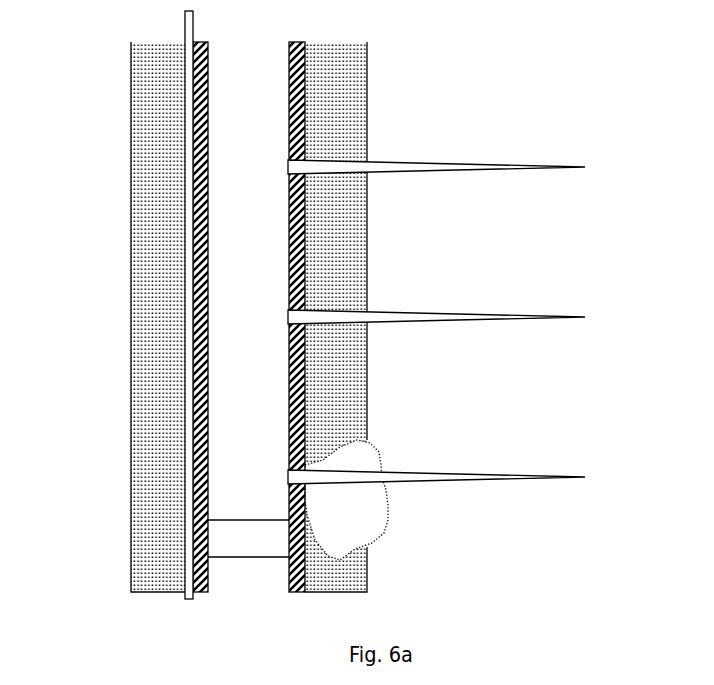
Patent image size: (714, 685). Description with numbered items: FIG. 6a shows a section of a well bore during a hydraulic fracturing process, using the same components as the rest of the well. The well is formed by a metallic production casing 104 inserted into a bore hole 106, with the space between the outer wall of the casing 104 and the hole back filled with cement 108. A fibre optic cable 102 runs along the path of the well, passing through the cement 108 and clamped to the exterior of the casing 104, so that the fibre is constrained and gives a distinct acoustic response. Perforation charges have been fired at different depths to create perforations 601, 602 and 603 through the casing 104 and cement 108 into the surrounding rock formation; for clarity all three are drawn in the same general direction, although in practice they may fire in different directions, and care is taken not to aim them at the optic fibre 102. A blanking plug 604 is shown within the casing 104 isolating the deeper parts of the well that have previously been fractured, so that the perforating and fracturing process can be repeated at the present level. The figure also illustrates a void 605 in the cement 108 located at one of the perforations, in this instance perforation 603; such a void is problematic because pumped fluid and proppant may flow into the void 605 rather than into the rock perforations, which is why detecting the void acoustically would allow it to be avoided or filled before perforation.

The fibre optic cable 102 is at (185, 31).
The production casing 104 is at (303, 83).
The bore hole 106 is at (131, 159).
The cement 108 is at (352, 110).
The perforation 601 is at (555, 165).
The perforation 602 is at (573, 315).
The perforation 603 is at (567, 473).
The blanking plug 604 is at (222, 528).
The void 605 is at (375, 527).